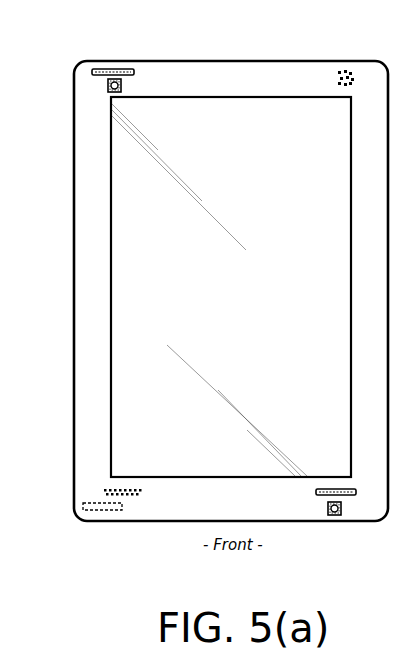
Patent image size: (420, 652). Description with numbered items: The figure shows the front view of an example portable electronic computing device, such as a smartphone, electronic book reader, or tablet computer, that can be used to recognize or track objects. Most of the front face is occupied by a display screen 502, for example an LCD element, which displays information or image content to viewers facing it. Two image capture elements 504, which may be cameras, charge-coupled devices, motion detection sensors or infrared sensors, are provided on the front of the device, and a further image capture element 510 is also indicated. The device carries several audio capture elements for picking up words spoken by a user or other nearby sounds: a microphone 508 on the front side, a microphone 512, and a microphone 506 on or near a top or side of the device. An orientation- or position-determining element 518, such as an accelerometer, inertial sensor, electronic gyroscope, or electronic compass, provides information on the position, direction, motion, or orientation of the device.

The display screen 502 is at (111, 207).
The image capture element 504 is at (108, 88).
The microphone 506 is at (122, 68).
The microphone 508 is at (348, 496).
The image capture element 510 is at (341, 70).
The microphone 512 is at (128, 496).
The orientation- or position-determining element 518 is at (100, 510).